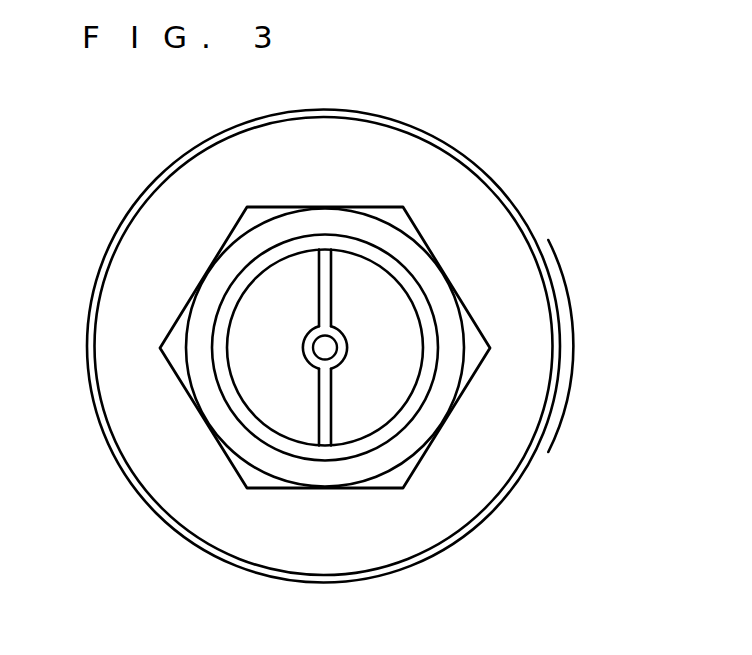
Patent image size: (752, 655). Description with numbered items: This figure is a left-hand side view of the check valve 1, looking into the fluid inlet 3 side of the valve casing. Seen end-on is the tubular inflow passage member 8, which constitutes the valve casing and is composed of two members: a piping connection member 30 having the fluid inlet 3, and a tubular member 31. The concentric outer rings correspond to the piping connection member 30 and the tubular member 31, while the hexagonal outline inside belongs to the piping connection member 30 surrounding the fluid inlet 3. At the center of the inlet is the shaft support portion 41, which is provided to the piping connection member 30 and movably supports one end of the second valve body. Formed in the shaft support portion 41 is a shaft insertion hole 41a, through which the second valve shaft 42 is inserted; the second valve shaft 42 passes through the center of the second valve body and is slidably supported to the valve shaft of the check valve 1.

The check valve 1 is at (379, 351).
The fluid inlet 3 is at (383, 322).
The tubular inflow passage member 8 is at (505, 460).
The piping connection member 30 is at (442, 522).
The tubular member 31 is at (562, 392).
The shaft support portion 41 is at (328, 408).
The shaft insertion hole 41a is at (335, 338).
The second valve shaft 42 is at (318, 351).